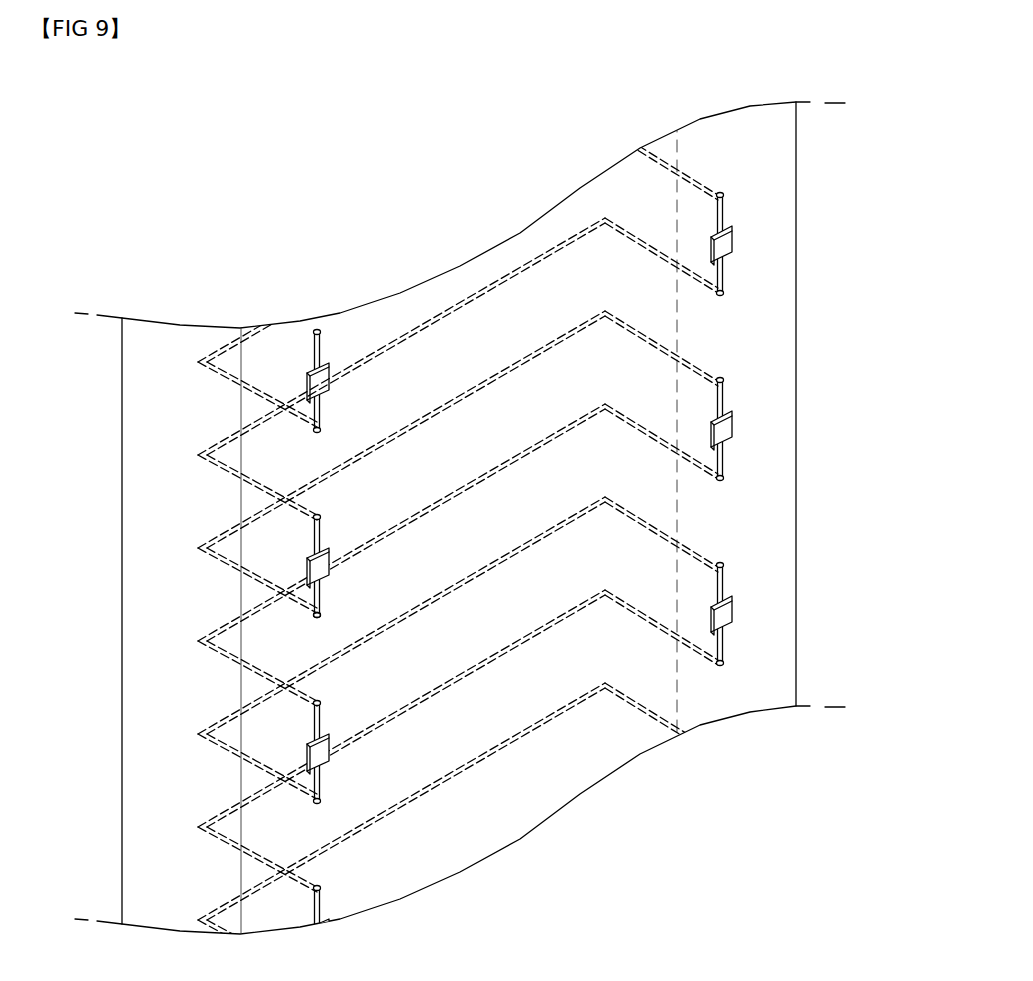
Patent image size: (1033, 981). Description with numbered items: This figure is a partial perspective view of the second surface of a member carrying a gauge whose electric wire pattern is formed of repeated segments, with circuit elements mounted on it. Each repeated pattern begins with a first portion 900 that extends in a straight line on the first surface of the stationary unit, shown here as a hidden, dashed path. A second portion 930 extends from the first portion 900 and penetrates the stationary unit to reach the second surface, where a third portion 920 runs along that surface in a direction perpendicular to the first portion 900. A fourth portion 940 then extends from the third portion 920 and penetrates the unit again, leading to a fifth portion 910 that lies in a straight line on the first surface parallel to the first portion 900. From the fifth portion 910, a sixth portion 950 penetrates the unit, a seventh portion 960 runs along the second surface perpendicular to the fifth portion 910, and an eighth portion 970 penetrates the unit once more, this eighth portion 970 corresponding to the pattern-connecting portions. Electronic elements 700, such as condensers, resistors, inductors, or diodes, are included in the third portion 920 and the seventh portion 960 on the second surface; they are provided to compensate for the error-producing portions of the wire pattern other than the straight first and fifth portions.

The electronic elements 700 is at (338, 592).
The first portion 900 is at (450, 306).
The fifth portion 910 is at (410, 423).
The third portion 920 is at (308, 549).
The second portion 930 is at (232, 476).
The fourth portion 940 is at (316, 612).
The sixth portion 950 is at (662, 347).
The seventh portion 960 is at (725, 397).
The eighth portion 970 is at (651, 437).